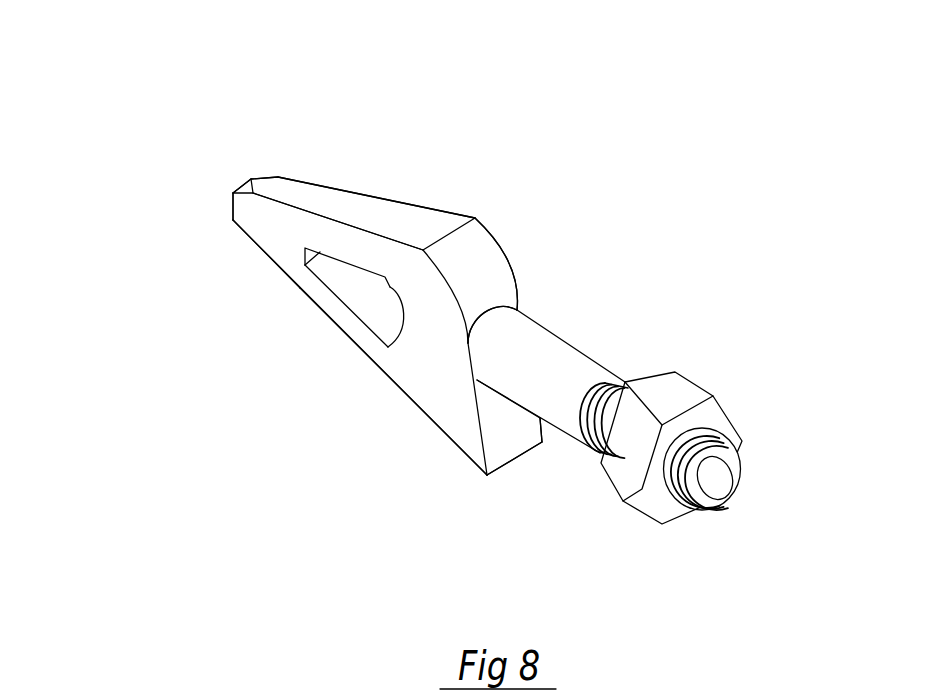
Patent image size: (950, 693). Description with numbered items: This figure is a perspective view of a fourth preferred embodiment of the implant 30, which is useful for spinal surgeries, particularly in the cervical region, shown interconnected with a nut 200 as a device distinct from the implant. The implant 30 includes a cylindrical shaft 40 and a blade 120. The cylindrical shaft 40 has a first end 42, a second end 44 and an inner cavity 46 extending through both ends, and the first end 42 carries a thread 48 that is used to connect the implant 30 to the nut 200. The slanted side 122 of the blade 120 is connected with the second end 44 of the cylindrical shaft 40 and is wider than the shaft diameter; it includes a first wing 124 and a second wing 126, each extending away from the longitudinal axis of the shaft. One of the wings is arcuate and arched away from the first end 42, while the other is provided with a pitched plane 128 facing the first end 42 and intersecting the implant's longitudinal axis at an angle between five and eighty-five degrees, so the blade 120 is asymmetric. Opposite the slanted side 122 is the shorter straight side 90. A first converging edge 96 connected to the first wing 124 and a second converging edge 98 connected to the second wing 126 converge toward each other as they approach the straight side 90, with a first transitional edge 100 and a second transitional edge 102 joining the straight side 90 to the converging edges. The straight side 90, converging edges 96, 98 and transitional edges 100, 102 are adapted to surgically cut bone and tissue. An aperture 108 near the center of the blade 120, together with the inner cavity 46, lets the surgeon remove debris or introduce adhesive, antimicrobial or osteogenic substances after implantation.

The implant 30 is at (425, 265).
The cylindrical shaft 40 is at (584, 342).
The first end 42 is at (776, 459).
The second end 44 is at (564, 260).
The inner cavity 46 is at (788, 523).
The thread 48 is at (662, 371).
The straight side 90 is at (156, 188).
The first converging edge 96 is at (393, 410).
The second converging edge 98 is at (359, 151).
The first transitional edge 100 is at (197, 262).
The second transitional edge 102 is at (199, 142).
The aperture 108 is at (294, 324).
The blade 120 is at (328, 121).
The slanted side 122 is at (548, 509).
The first wing 124 is at (449, 521).
The second wing 126 is at (562, 215).
The pitched plane 128 is at (610, 492).
The nut 200 is at (729, 427).